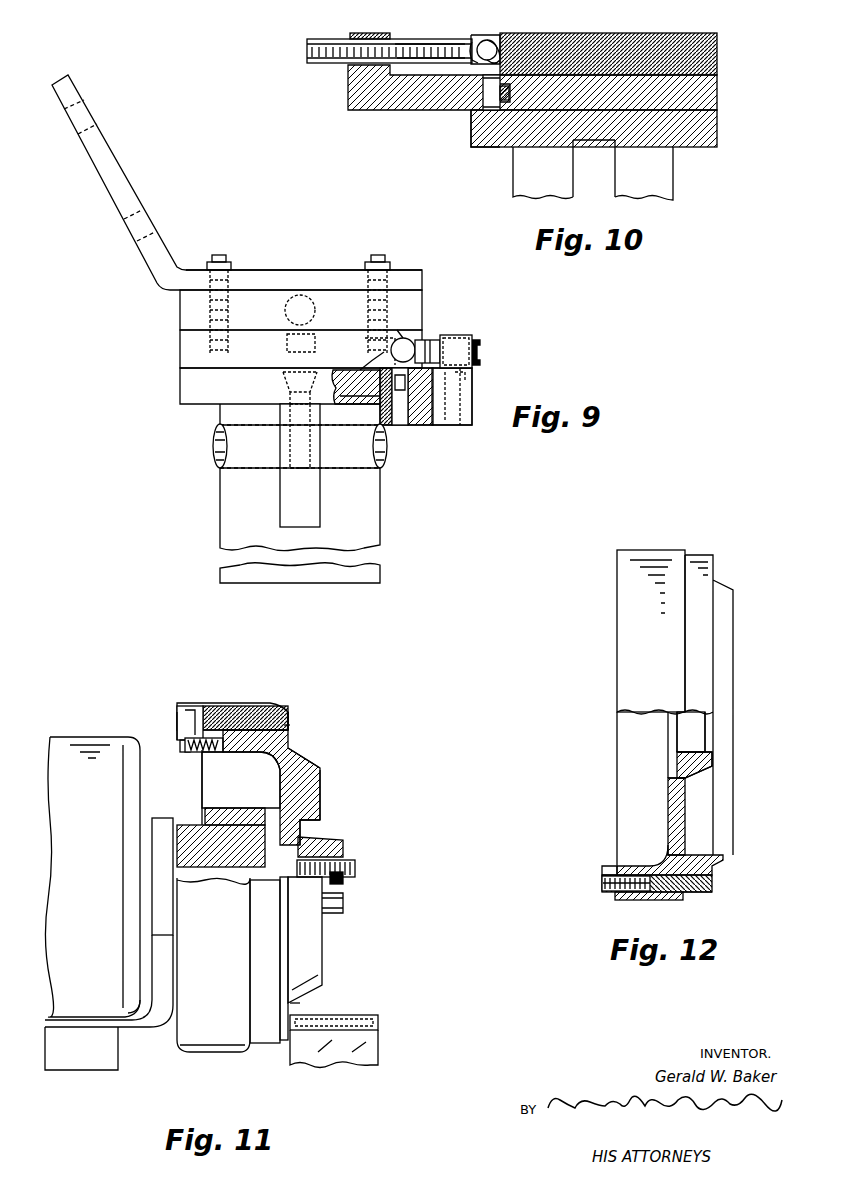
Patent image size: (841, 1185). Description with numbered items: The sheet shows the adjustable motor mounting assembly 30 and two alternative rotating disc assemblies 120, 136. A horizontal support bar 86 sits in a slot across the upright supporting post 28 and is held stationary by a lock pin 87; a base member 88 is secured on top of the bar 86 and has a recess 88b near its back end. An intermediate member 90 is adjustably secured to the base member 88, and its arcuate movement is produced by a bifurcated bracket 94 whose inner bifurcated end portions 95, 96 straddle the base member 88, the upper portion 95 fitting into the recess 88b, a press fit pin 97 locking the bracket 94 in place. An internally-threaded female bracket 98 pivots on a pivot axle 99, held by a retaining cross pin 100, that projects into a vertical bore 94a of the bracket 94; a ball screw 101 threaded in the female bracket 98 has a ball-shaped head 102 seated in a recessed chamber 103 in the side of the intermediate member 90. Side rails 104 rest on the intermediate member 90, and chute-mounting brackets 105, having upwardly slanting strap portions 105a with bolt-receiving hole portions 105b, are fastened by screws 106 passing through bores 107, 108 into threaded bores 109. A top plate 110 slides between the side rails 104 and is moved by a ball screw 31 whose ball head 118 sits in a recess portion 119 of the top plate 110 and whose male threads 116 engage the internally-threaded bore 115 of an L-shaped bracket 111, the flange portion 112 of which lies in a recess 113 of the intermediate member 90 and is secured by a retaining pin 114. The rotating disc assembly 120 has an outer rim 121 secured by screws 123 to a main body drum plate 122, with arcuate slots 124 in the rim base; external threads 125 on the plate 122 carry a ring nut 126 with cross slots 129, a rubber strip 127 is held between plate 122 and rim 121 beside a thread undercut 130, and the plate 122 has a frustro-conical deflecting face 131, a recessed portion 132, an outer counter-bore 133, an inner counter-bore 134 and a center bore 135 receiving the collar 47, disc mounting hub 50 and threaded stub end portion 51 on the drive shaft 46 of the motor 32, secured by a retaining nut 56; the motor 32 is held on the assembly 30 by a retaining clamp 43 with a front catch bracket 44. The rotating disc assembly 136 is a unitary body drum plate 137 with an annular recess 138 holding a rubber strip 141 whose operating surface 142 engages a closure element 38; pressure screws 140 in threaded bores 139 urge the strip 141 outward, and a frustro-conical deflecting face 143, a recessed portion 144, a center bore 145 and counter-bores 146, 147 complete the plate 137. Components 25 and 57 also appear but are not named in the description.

In FIG. 11, the bracket 25 is at (379, 1058).
In FIG. 10, the upright supporting post 28 is at (674, 176).
In FIG. 9, the upright supporting post 28 is at (220, 528).
In FIG. 9, the adjustable motor mounting assembly 30 is at (180, 360).
In FIG. 11, the adjustable motor mounting assembly 30 is at (100, 1071).
In FIG. 10, the ball-headed adjusting screw 31 is at (436, 44).
In FIG. 11, the motor 32 is at (78, 737).
In FIG. 11, the closure element 38 is at (379, 1018).
In FIG. 11, the spring-tensioned retaining clamp 43 is at (157, 1028).
In FIG. 11, the front catch bracket 44 is at (162, 818).
In FIG. 11, the drive shaft 46 is at (218, 882).
In FIG. 11, the collar 47 is at (266, 882).
In FIG. 11, the disc mounting hub 50 is at (288, 880).
In FIG. 11, the threaded stub end portion 51 is at (356, 866).
In FIG. 11, the retaining nut 56 is at (343, 908).
In FIG. 11, the nut 57 is at (345, 880).
In FIG. 10, the horizontal support bar 86 is at (588, 197).
In FIG. 9, the horizontal support bar 86 is at (318, 518).
In FIG. 9, the lock pin 87 is at (213, 450).
In FIG. 10, the base member 88 is at (718, 127).
In FIG. 9, the base member 88 is at (180, 388).
In FIG. 9, the recess 88b is at (360, 397).
In FIG. 10, the intermediate member 90 is at (718, 90).
In FIG. 9, the intermediate member 90 is at (180, 337).
In FIG. 9, the bifurcated bracket 94 is at (473, 420).
In FIG. 9, the vertical bore 94a is at (462, 400).
In FIG. 9, the upper bifurcated end portion 95 is at (356, 387).
In FIG. 9, the lower bifurcated end portion 96 is at (420, 425).
In FIG. 9, the press fit pin 97 is at (388, 425).
In FIG. 9, the female bracket 98 is at (473, 340).
In FIG. 9, the pivot axle 99 is at (466, 380).
In FIG. 9, the retaining cross pin 100 is at (480, 364).
In FIG. 9, the ball screw 101 is at (432, 340).
In FIG. 9, the ball-shaped head 102 is at (408, 338).
In FIG. 9, the recessed chamber 103 is at (372, 358).
In FIG. 9, the side rails 104 is at (180, 312).
In FIG. 9, the chute-mounting brackets 105 is at (324, 270).
In FIG. 9, the upwardly slanting strap portions 105a is at (117, 165).
In FIG. 9, the bolt-receiving hole portions 105b is at (88, 108).
In FIG. 9, the screws 106 is at (220, 258).
In FIG. 9, the bores 107 is at (388, 270).
In FIG. 9, the bores 108 is at (392, 318).
In FIG. 9, the threaded bores 109 is at (366, 344).
In FIG. 10, the top plate 110 is at (578, 33).
In FIG. 10, the L-shaped bracket 111 is at (340, 34).
In FIG. 10, the flange portion 112 is at (474, 147).
In FIG. 10, the recess 113 is at (512, 100).
In FIG. 10, the retaining pin 114 is at (482, 103).
In FIG. 10, the internally-threaded bore 115 is at (381, 33).
In FIG. 10, the male threads 116 is at (402, 42).
In FIG. 10, the ball head 118 is at (482, 40).
In FIG. 10, the recess portion 119 is at (496, 36).
In FIG. 11, the rotating disc assembly 120 is at (300, 1003).
In FIG. 11, the outer rim 121 is at (260, 703).
In FIG. 11, the main body drum plate 122 is at (250, 752).
In FIG. 11, the screws 123 is at (180, 745).
In FIG. 11, the arcuate slots 124 is at (177, 712).
In FIG. 11, the external threads 125 is at (220, 752).
In FIG. 11, the ring nut 126 is at (205, 706).
In FIG. 11, the rubber strip 127 is at (289, 710).
In FIG. 11, the cross slots 129 is at (205, 706).
In FIG. 11, the thread undercut 130 is at (288, 742).
In FIG. 11, the frustro-conical deflecting face 131 is at (308, 760).
In FIG. 11, the recessed portion 132 is at (321, 788).
In FIG. 11, the outer counter-bore 133 is at (226, 826).
In FIG. 11, the inner counter-bore 134 is at (304, 823).
In FIG. 11, the center bore 135 is at (328, 843).
In FIG. 12, the rotating disc assembly 136 is at (734, 792).
In FIG. 12, the unitary body drum plate 137 is at (643, 550).
In FIG. 12, the annular recess 138 is at (661, 900).
In FIG. 12, the threaded bores 139 is at (612, 893).
In FIG. 12, the adjustable pressure screw 140 is at (604, 877).
In FIG. 12, the rubber strip 141 is at (692, 893).
In FIG. 12, the operating surface 142 is at (713, 884).
In FIG. 12, the frustro-conical annular deflecting face 143 is at (723, 860).
In FIG. 12, the recessed portion 144 is at (686, 820).
In FIG. 12, the center bore 145 is at (712, 745).
In FIG. 12, the counter-bore 146 is at (678, 742).
In FIG. 12, the counter-bore 147 is at (668, 770).